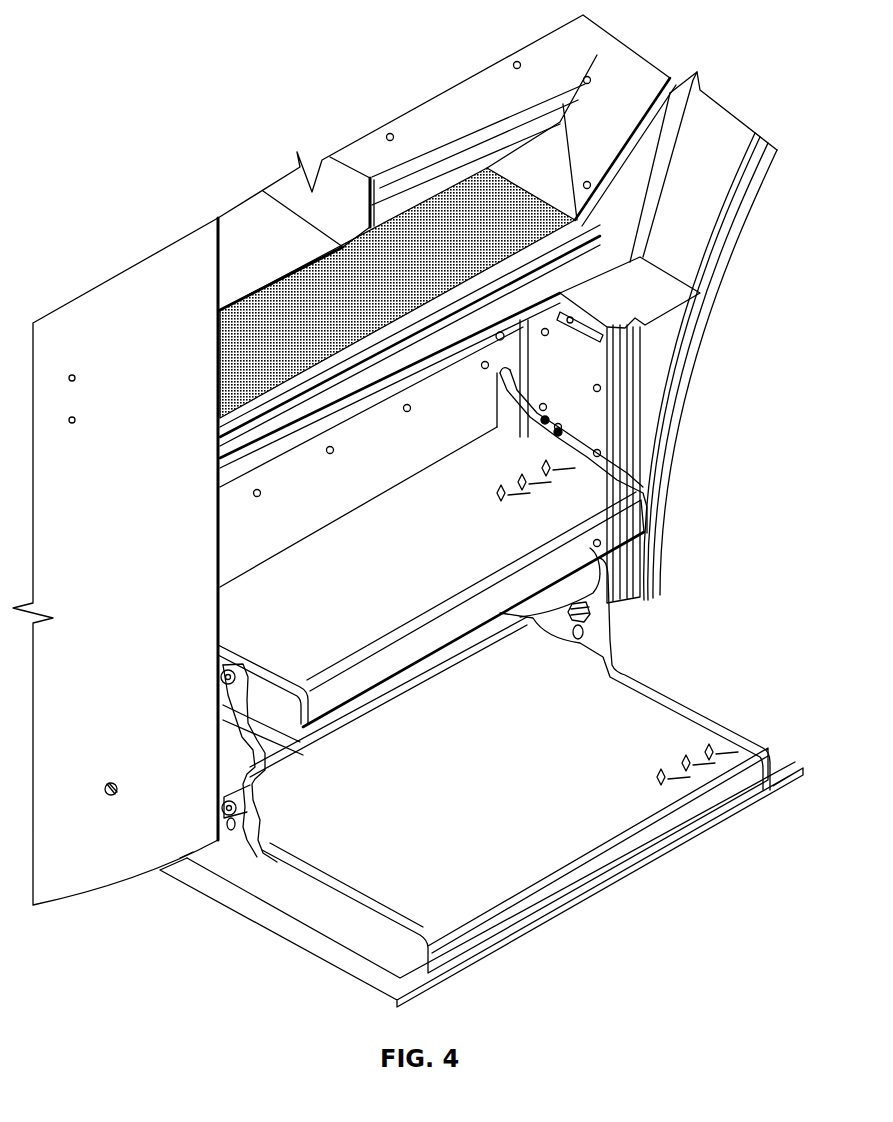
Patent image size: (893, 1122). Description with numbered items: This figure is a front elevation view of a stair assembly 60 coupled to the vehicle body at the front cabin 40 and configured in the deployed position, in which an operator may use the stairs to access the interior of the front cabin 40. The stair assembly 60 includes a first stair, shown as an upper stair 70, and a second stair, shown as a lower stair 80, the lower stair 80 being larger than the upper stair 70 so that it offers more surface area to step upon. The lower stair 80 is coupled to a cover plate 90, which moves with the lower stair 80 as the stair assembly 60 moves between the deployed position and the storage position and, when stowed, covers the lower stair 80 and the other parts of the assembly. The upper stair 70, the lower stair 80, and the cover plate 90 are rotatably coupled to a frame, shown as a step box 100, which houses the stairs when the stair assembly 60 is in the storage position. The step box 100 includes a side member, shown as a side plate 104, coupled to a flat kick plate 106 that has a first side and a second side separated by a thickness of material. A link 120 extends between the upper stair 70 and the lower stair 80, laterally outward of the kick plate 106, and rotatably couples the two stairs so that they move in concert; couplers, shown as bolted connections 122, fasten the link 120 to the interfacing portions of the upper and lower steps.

The front cabin 40 is at (733, 128).
The stair assembly 60 is at (712, 668).
The upper stair 70 is at (403, 586).
The lower stair 80 is at (505, 746).
The cover plate 90 is at (357, 967).
The step box 100 is at (593, 418).
The side plate 104 is at (507, 395).
The kick plate 106 is at (350, 498).
The link 120 is at (240, 748).
The bolted connection 122 is at (567, 617).